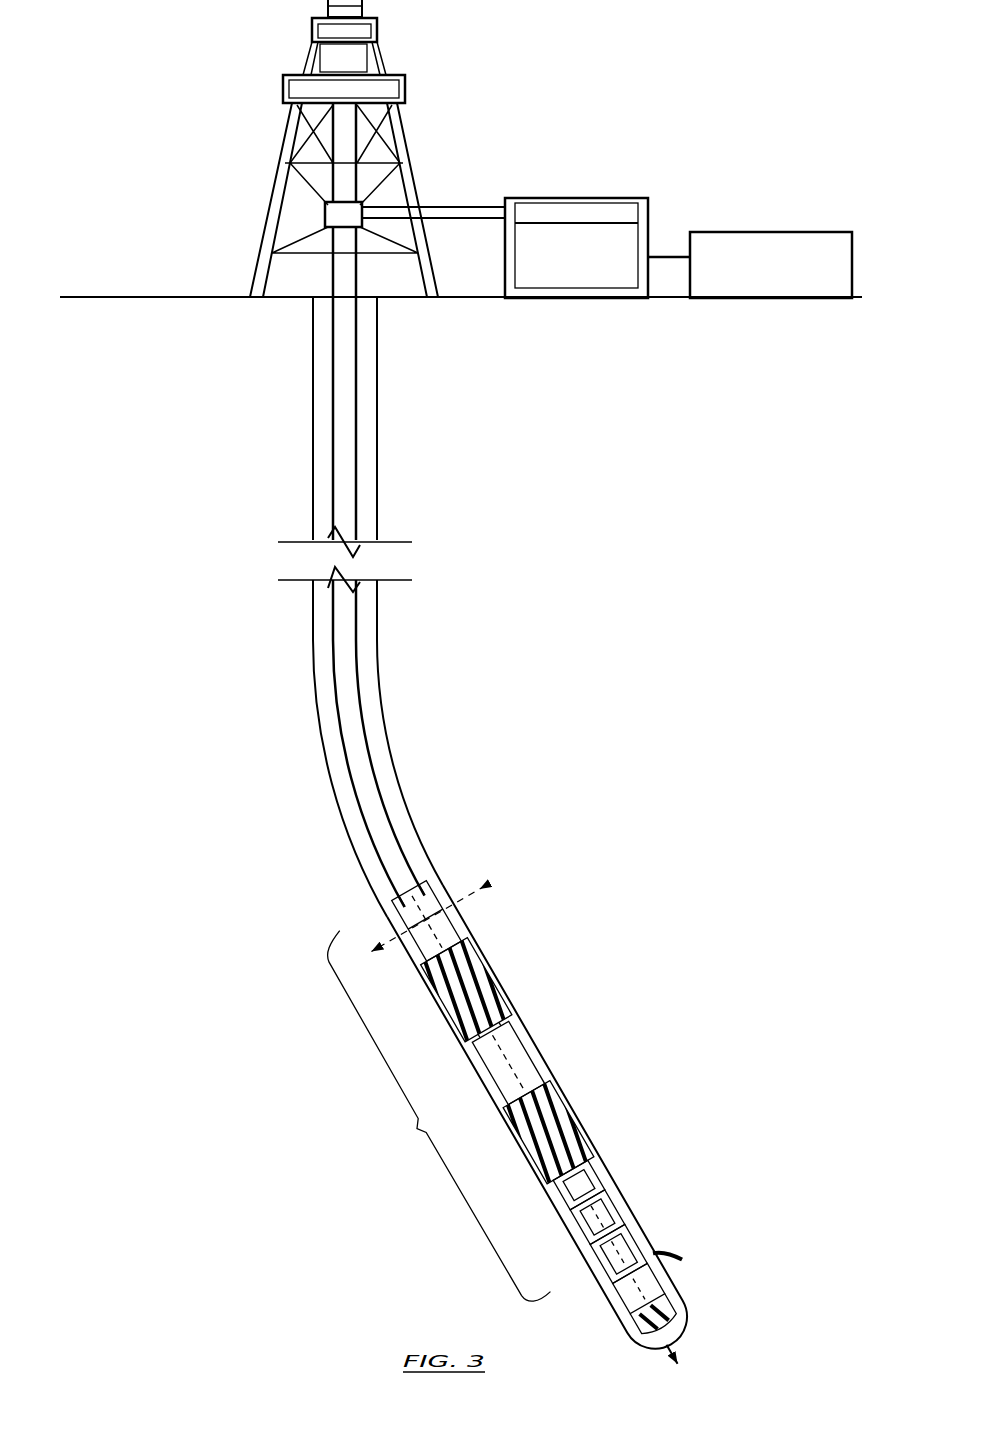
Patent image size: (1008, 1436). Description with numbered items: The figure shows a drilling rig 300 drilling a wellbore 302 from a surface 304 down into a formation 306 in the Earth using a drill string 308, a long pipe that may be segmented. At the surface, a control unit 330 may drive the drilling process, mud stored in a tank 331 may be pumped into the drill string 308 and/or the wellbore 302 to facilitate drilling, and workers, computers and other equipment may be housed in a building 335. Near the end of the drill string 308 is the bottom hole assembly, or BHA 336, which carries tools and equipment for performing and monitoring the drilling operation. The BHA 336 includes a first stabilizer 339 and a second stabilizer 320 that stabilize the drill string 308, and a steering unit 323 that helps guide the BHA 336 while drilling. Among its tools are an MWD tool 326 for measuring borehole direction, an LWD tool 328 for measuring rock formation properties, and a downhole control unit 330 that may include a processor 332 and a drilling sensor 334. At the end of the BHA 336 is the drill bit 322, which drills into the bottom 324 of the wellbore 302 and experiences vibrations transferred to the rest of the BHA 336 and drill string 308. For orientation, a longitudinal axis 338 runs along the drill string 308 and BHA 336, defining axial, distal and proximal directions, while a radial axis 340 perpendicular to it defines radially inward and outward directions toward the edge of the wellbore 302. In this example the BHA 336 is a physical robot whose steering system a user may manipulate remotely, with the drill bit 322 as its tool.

The drilling rig 300 is at (272, 200).
The wellbore 302 is at (321, 487).
The surface 304 is at (155, 297).
The formation 306 is at (119, 625).
The drill string 308 is at (360, 645).
The second stabilizer 320 is at (570, 1108).
The drill bit 322 is at (677, 1288).
The steering unit 323 is at (640, 1230).
The bottom 324 is at (685, 1334).
The MWD tool 326 is at (533, 1044).
The LWD tool 328 is at (467, 925).
The control unit 330 is at (365, 203).
The tank 331 is at (589, 196).
The processor 332 is at (613, 1177).
The drilling sensor 334 is at (625, 1202).
The building 335 is at (718, 235).
The bottom hole assembly (BHA) 336 is at (416, 1130).
The longitudinal axis 338 is at (407, 880).
The first stabilizer 339 is at (498, 982).
The radial axis 340 is at (488, 884).